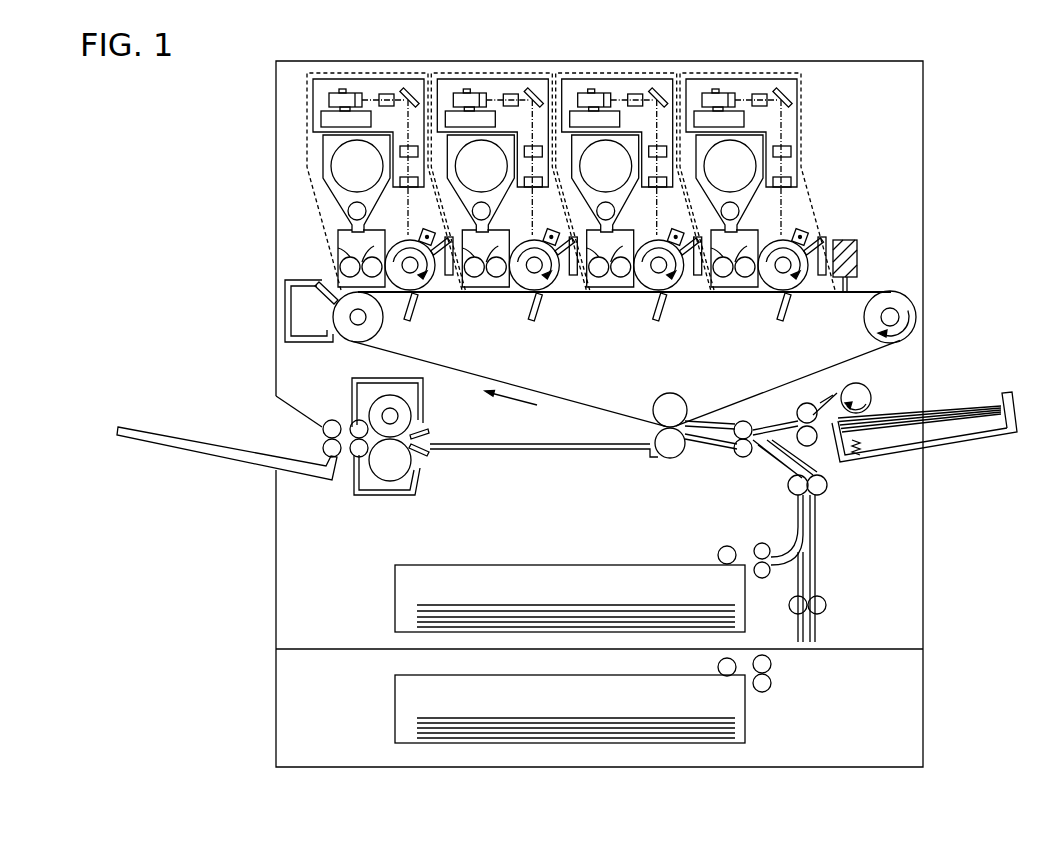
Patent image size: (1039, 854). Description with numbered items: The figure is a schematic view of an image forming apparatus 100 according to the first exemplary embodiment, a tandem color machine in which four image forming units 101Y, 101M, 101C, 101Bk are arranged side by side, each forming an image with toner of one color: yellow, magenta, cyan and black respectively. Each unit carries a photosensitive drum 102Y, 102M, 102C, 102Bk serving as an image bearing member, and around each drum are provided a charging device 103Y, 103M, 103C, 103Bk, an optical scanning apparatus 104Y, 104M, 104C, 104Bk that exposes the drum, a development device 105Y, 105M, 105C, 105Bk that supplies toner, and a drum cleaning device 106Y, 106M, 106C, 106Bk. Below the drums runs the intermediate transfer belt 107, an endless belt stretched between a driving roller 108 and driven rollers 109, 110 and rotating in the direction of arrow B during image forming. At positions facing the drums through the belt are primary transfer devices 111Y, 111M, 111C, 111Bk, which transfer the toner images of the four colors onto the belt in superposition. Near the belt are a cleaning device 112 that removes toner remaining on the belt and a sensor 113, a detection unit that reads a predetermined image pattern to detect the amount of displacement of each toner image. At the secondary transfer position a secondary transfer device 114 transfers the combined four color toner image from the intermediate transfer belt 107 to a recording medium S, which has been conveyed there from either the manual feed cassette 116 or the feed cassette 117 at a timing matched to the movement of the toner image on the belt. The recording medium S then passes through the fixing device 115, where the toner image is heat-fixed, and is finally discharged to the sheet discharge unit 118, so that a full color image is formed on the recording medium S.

The image forming apparatus 100 is at (900, 56).
The image forming unit 101Y is at (387, 194).
The image forming unit 101M is at (523, 195).
The image forming unit 101C is at (645, 197).
The image forming unit 101Bk is at (782, 197).
The photosensitive drum 102Y is at (430, 283).
The photosensitive drum 102M is at (553, 284).
The photosensitive drum 102C is at (679, 284).
The photosensitive drum 102Bk is at (803, 284).
The charging device 103Y is at (430, 216).
The charging device 103M is at (555, 216).
The charging device 103C is at (676, 229).
The charging device 103Bk is at (801, 230).
The optical scanning apparatus 104Y is at (390, 79).
The optical scanning apparatus 104M is at (514, 79).
The optical scanning apparatus 104C is at (639, 79).
The optical scanning apparatus 104Bk is at (780, 79).
The development device 105Y is at (339, 254).
The development device 105M is at (496, 288).
The development device 105C is at (618, 288).
The development device 105Bk is at (745, 288).
The drum cleaning device 106Y is at (452, 277).
The drum cleaning device 106M is at (576, 277).
The drum cleaning device 106C is at (700, 277).
The drum cleaning device 106Bk is at (823, 240).
The intermediate transfer belt 107 is at (567, 401).
The driving roller 108 is at (917, 313).
The driven roller 109 is at (350, 343).
The driven roller 110 is at (688, 407).
The primary transfer device 111Y is at (404, 321).
The primary transfer device 111M is at (530, 321).
The primary transfer device 111C is at (655, 321).
The primary transfer device 111Bk is at (780, 321).
The cleaning device 112 is at (290, 308).
The sensor 113 is at (857, 256).
The secondary transfer device 114 is at (672, 458).
The fixing device 115 is at (382, 497).
The manual feed cassette 116 is at (983, 440).
The feed cassette 117 is at (395, 600).
The sheet discharge unit 118 is at (190, 440).
The recording medium S is at (953, 405).
The arrow B is at (511, 409).